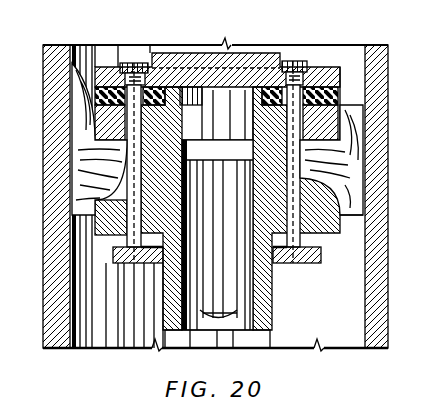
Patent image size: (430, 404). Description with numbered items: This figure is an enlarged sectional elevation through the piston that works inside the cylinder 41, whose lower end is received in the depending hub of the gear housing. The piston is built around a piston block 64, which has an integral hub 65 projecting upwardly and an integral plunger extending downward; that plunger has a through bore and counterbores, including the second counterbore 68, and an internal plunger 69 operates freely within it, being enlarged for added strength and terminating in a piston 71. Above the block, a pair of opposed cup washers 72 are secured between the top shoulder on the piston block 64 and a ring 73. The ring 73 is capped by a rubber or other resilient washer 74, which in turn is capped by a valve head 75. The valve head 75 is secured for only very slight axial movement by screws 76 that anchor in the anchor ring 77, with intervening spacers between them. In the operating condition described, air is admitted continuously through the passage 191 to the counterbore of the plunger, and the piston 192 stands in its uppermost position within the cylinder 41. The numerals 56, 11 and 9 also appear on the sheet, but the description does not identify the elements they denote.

The piston 71 is at (203, 53).
The piston 192 is at (222, 117).
The integral hub 65 is at (262, 87).
The valve head 75 is at (313, 80).
The resilient washer 74 is at (346, 100).
The ring 73 is at (361, 110).
The cylinder 41 is at (341, 158).
The anchor ring 77 is at (313, 262).
The screws 76 is at (389, 158).
The cup washers 72 is at (80, 186).
The piston block 64 is at (107, 223).
The internal plunger 69 is at (227, 288).
The second counterbore 68 is at (230, 314).
The passage 191 is at (180, 250).
The base plate 56 is at (167, 318).
The adjacent part 11 is at (424, 294).
The adjacent part 9 is at (424, 334).